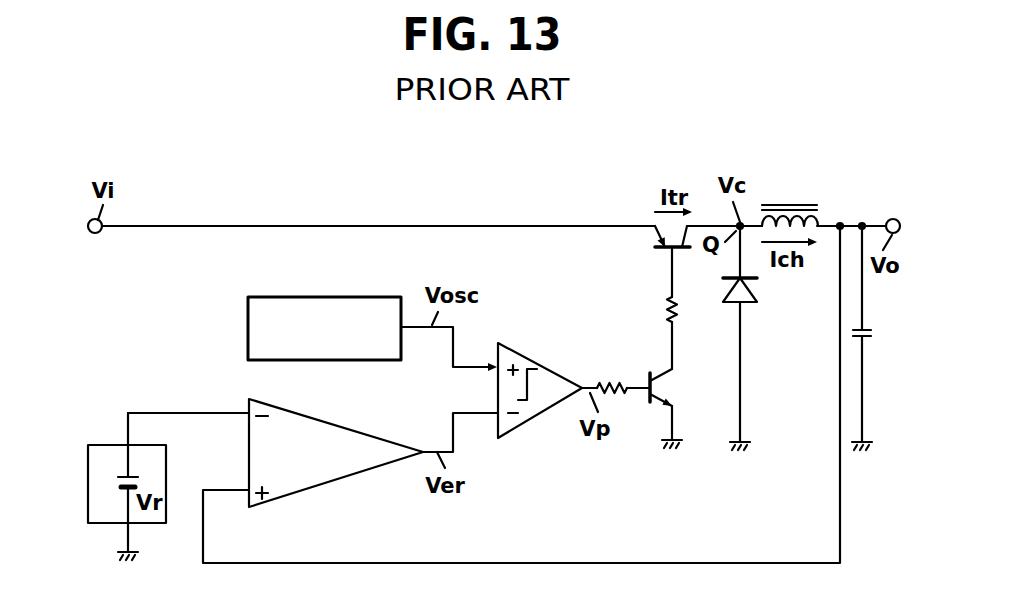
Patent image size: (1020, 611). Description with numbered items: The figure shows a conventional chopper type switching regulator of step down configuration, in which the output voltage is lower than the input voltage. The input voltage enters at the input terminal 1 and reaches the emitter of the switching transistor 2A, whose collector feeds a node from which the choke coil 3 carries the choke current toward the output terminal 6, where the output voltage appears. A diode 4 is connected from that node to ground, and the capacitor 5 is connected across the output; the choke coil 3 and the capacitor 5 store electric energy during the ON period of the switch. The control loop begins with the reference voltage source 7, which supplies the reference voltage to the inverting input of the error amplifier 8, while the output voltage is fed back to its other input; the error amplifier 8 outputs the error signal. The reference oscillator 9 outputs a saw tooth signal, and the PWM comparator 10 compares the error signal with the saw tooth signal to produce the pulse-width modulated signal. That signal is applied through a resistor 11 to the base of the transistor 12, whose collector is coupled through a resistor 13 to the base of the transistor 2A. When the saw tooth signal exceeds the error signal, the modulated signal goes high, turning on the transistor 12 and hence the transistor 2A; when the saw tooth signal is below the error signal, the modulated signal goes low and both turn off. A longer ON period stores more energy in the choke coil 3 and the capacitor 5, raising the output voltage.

The input terminal 1 is at (95, 234).
The transistor 2A is at (661, 231).
The choke coil 3 is at (792, 202).
The flywheel diode 4 is at (755, 290).
The capacitor 5 is at (875, 333).
The output terminal 6 is at (890, 218).
The reference voltage source 7 is at (105, 443).
The error amplifier 8 is at (362, 428).
The reference oscillator 9 is at (357, 294).
The PWM comparator 10 is at (553, 370).
The base resistor 11 is at (615, 373).
The transistor 12 is at (675, 390).
The resistor 13 is at (680, 310).